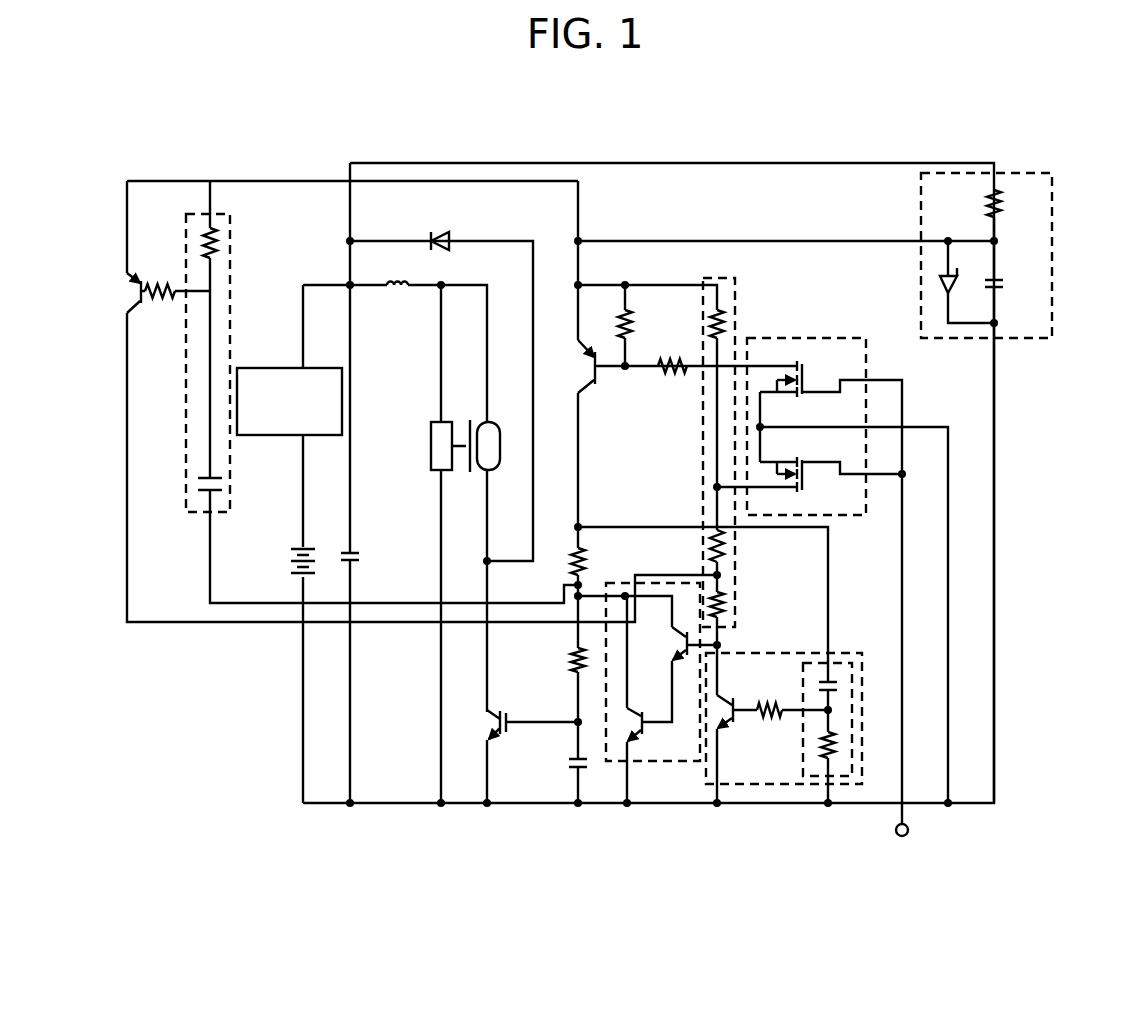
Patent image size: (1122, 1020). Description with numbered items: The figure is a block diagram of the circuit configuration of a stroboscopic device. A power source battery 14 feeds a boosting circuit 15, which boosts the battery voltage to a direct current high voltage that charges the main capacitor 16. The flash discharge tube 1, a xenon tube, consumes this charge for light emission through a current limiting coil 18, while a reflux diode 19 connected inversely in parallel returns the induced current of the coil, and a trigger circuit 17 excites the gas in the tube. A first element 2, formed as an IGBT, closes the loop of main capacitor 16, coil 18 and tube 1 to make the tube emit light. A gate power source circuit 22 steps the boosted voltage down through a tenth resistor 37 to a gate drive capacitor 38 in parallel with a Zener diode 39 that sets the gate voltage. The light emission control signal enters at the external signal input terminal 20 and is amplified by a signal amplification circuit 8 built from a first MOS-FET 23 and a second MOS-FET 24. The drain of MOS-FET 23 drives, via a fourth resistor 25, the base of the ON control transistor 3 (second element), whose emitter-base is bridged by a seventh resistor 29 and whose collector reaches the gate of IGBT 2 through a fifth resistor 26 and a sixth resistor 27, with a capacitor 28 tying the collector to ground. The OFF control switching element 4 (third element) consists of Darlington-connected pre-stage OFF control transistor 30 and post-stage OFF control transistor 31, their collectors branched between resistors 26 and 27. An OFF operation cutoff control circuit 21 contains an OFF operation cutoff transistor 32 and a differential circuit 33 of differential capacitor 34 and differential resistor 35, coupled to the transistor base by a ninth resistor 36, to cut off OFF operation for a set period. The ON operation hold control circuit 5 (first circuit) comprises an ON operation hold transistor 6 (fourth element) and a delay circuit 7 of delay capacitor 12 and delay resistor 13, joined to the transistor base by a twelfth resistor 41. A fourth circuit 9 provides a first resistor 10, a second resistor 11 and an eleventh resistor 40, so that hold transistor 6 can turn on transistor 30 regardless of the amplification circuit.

The flash discharge tube 1 is at (500, 446).
The first element (IGBT) 2 is at (499, 712).
The second element (ON control transistor) 3 is at (597, 380).
The third element (OFF control switching element) 4 is at (650, 584).
The first circuit (ON operation hold control circuit) 5 is at (243, 170).
The fourth element (ON operation hold transistor) 6 is at (132, 293).
The second circuit (delay circuit) 7 is at (206, 214).
The third circuit (signal amplification circuit) 8 is at (833, 338).
The fourth circuit 9 is at (723, 278).
The first resistor 10 is at (712, 530).
The second resistor 11 is at (714, 316).
The first storage element (delay capacitor) 12 is at (205, 490).
The third resistor (delay resistor) 13 is at (218, 238).
The power source battery 14 is at (297, 563).
The fifth circuit (boosting circuit) 15 is at (290, 366).
The second storage element (main capacitor) 16 is at (360, 558).
The sixth circuit (trigger circuit) 17 is at (436, 421).
The current limiting coil 18 is at (393, 298).
The reflux diode 19 is at (438, 236).
The external signal input terminal 20 is at (902, 847).
The seventh circuit (OFF operation cutoff control circuit) 21 is at (783, 786).
The eighth circuit (gate power source circuit) 22 is at (1025, 173).
The first MOS-FET 23 is at (777, 368).
The second MOS-FET 24 is at (780, 484).
The fourth resistor 25 is at (668, 378).
The fifth resistor 26 is at (568, 563).
The sixth resistor 27 is at (572, 658).
The third storage element (capacitor) 28 is at (570, 765).
The seventh resistor 29 is at (636, 323).
The pre-stage OFF control transistor 30 is at (681, 630).
The post-stage OFF control transistor 31 is at (644, 738).
The OFF operation cutoff transistor 32 is at (727, 694).
The differential circuit 33 is at (838, 778).
The third storage element (differential capacitor) 34 is at (832, 677).
The eighth resistor (differential resistor) 35 is at (838, 738).
The ninth resistor 36 is at (766, 722).
The tenth resistor 37 is at (1003, 207).
The fourth storage element (gate drive capacitor) 38 is at (1003, 283).
The Zener diode 39 is at (938, 283).
The eleventh resistor 40 is at (735, 605).
The twelfth resistor 41 is at (160, 284).